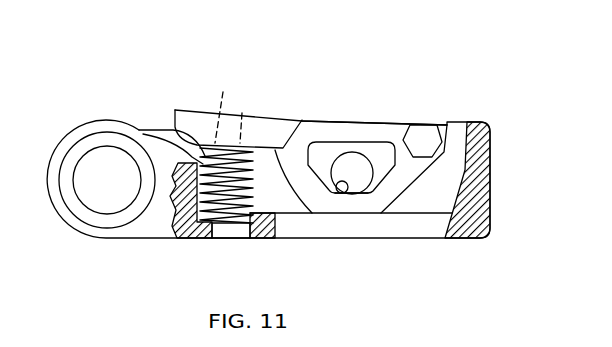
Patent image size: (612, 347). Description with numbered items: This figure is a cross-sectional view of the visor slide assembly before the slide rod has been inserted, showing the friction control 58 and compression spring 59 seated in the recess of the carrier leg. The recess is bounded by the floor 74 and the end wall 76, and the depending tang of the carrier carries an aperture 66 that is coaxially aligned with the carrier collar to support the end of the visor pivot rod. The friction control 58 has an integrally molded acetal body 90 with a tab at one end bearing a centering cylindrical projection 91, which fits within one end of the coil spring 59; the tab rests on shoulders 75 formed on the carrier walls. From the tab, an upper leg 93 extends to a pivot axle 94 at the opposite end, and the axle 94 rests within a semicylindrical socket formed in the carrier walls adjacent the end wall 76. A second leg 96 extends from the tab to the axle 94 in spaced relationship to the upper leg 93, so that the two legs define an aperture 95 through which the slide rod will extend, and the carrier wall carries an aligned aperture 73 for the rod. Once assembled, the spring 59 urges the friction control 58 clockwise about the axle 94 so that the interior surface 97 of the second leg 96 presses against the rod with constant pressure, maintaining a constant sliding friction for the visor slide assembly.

The friction control 58 is at (285, 84).
The compression spring 59 is at (173, 141).
The aperture 66 is at (72, 146).
The aperture 73 is at (357, 182).
The floor 74 is at (177, 223).
The shoulders 75 is at (85, 213).
The end wall 76 is at (492, 160).
The body 90 is at (368, 102).
The centering cylindrical projection 91 is at (238, 108).
The upper leg 93 is at (330, 118).
The pivot axle 94 is at (420, 125).
The aperture 95 is at (386, 190).
The second leg 96 is at (346, 193).
The interior surface 97 is at (333, 189).